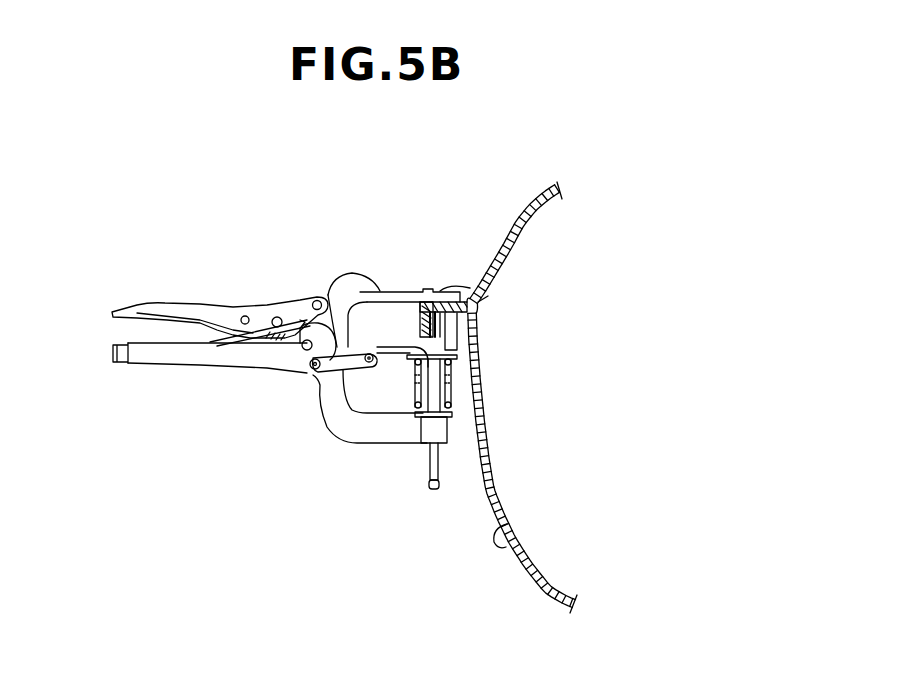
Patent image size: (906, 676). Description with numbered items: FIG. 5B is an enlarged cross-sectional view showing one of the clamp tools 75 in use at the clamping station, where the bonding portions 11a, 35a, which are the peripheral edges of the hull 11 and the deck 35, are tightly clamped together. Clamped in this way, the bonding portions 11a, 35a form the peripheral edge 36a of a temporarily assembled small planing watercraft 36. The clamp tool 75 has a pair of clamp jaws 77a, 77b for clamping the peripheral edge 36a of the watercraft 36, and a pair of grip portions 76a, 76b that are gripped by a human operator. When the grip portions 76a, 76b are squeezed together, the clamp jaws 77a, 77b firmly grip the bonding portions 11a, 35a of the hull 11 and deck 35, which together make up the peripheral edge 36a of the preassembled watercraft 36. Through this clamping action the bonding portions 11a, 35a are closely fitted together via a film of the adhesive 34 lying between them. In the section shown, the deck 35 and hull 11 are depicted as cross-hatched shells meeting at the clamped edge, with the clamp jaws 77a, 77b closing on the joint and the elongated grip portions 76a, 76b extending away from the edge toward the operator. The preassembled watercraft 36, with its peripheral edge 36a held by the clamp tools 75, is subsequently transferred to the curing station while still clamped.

The hull 11 is at (518, 543).
The bonding portion 11a is at (413, 298).
The adhesive 34 is at (485, 287).
The deck 35 is at (550, 180).
The bonding portion 35a is at (442, 297).
The temporarily assembled small planing watercraft 36 is at (750, 122).
The peripheral edge 36a is at (495, 174).
The clamp tool 75 is at (218, 255).
The grip portion 76a is at (180, 300).
The grip portion 76b is at (203, 355).
The clamp jaw 77a is at (447, 300).
The clamp jaw 77b is at (465, 338).